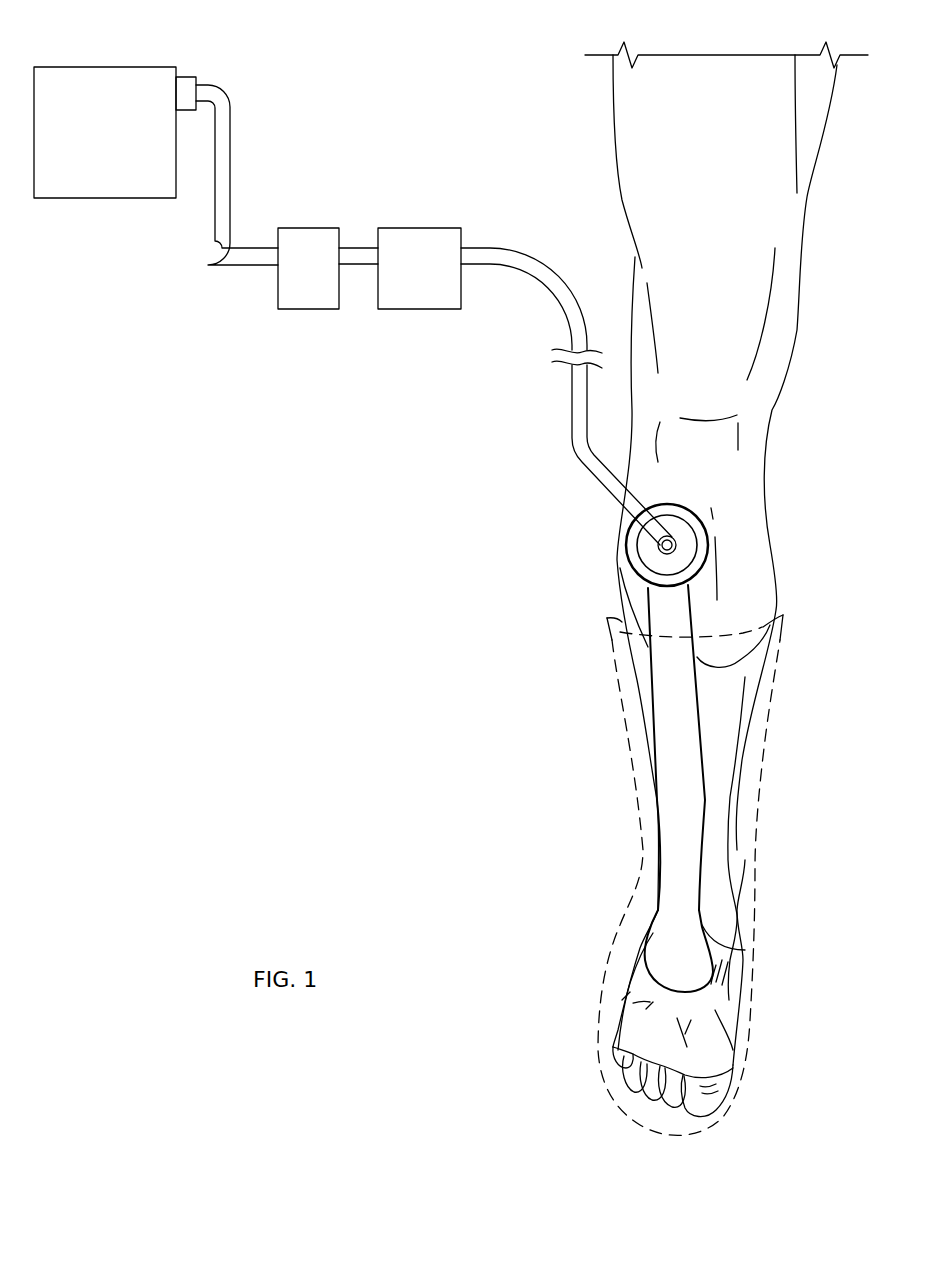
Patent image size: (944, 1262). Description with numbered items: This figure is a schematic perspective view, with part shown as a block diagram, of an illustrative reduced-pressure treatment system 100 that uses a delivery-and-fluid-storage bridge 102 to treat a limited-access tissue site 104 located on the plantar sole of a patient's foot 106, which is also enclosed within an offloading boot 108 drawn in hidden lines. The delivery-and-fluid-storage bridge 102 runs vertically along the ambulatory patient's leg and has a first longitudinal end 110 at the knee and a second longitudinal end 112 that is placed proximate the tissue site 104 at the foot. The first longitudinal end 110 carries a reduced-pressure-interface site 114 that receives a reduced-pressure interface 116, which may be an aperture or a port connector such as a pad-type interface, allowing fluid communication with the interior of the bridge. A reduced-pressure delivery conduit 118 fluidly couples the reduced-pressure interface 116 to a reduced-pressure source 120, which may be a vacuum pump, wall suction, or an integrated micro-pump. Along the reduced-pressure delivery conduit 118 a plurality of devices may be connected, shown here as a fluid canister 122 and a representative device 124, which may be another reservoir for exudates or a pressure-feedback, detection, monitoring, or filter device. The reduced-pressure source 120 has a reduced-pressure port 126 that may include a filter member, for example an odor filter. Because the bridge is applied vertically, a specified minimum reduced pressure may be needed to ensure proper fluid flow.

The reduced-pressure treatment system 100 is at (726, 579).
The delivery-and-fluid-storage bridge 102 is at (672, 768).
The tissue site 104 is at (629, 970).
The patient's foot 106 is at (640, 998).
The offloading boot 108 is at (750, 1045).
The first longitudinal end 110 is at (626, 536).
The second longitudinal end 112 is at (740, 950).
The reduced-pressure-interface site 114 is at (709, 529).
The reduced-pressure interface 116 is at (688, 523).
The reduced-pressure delivery conduit 118 is at (527, 255).
The reduced-pressure source 120 is at (107, 67).
The fluid canister 122 is at (307, 228).
The representative device 124 is at (422, 228).
The reduced-pressure port 126 is at (188, 77).